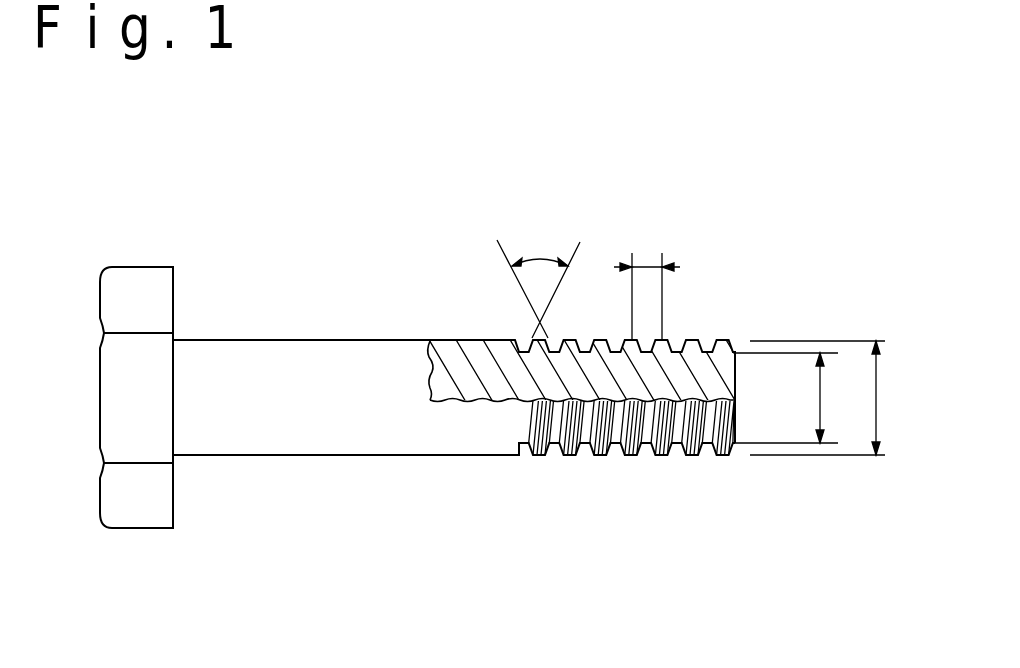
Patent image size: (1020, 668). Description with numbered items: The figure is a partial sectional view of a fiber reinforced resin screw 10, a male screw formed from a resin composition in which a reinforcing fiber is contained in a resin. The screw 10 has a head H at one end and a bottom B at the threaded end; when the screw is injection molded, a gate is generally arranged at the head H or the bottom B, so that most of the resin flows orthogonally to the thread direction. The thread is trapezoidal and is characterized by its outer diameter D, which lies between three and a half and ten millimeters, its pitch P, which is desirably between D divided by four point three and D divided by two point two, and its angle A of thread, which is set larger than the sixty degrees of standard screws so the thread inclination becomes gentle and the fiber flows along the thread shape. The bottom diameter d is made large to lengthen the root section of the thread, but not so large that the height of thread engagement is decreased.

The fiber reinforced resin screw 10 is at (782, 268).
The head H is at (117, 397).
The angle of thread A is at (538, 277).
The pitch P is at (647, 278).
The bottom B is at (753, 398).
The bottom diameter d is at (786, 398).
The outer diameter D is at (817, 398).